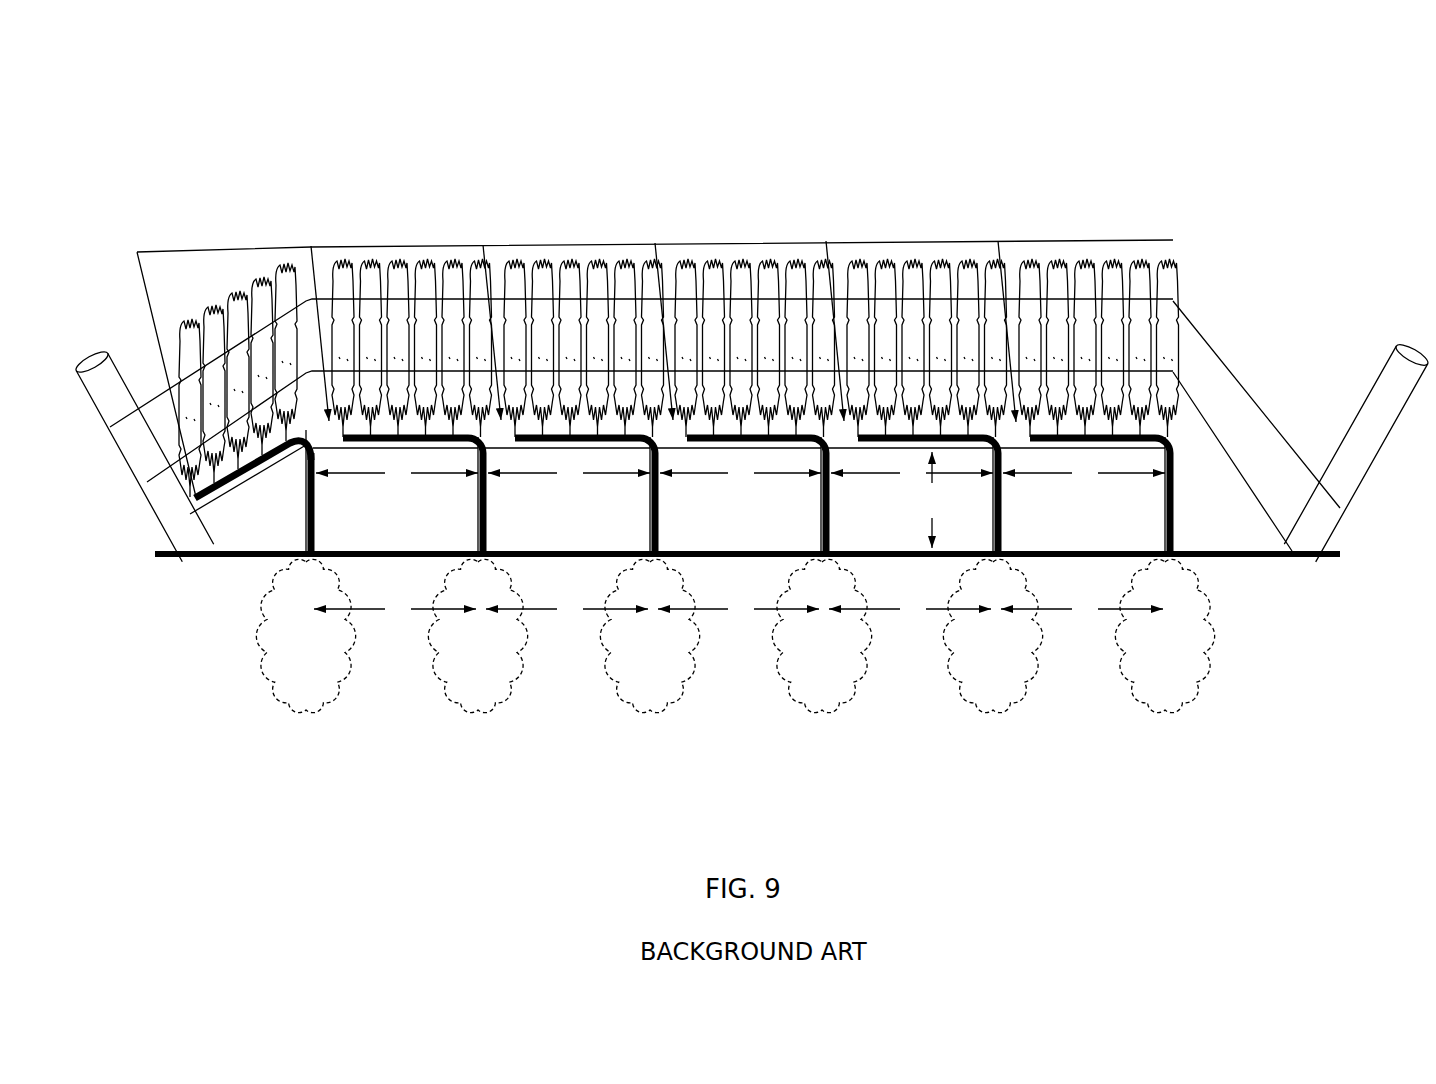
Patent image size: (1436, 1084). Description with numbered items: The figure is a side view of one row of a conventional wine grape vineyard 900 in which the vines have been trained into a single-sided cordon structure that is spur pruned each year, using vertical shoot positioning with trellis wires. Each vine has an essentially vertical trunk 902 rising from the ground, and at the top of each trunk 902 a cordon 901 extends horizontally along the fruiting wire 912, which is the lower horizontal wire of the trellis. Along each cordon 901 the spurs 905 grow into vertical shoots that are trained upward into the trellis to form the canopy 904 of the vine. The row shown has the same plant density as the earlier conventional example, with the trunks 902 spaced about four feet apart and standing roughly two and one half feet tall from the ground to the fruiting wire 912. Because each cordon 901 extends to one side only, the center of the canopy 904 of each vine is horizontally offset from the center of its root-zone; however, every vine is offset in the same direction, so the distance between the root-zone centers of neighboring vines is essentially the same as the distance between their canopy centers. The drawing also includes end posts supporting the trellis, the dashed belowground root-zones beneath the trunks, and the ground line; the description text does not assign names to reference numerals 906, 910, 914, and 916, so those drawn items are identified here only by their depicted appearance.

The vineyard 900 is at (768, 133).
The cordons 901 is at (998, 241).
The trunks 902 is at (316, 496).
The canopy 904 is at (1110, 248).
The spurs 905 is at (1144, 433).
The root zone / drip region 906 is at (320, 713).
The right side pipe 910 is at (1386, 346).
The fruiting wire 912 is at (273, 475).
The left side pipe 914 is at (177, 457).
The ground line 916 is at (1235, 563).